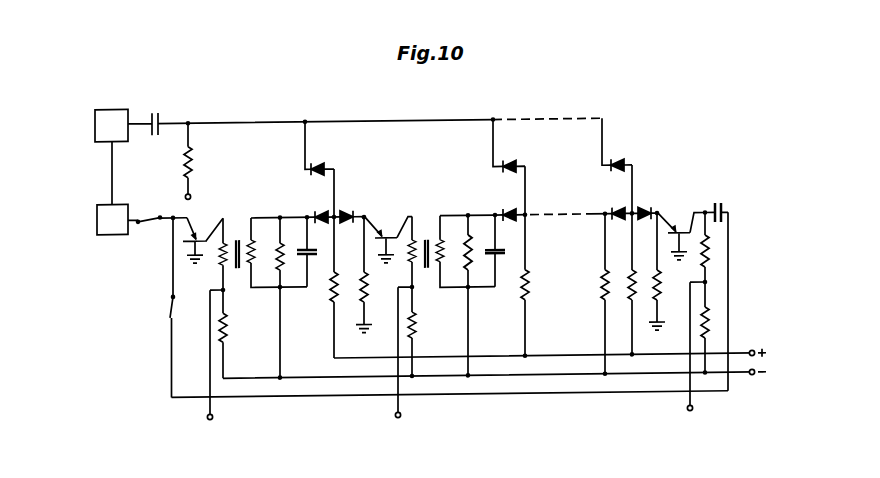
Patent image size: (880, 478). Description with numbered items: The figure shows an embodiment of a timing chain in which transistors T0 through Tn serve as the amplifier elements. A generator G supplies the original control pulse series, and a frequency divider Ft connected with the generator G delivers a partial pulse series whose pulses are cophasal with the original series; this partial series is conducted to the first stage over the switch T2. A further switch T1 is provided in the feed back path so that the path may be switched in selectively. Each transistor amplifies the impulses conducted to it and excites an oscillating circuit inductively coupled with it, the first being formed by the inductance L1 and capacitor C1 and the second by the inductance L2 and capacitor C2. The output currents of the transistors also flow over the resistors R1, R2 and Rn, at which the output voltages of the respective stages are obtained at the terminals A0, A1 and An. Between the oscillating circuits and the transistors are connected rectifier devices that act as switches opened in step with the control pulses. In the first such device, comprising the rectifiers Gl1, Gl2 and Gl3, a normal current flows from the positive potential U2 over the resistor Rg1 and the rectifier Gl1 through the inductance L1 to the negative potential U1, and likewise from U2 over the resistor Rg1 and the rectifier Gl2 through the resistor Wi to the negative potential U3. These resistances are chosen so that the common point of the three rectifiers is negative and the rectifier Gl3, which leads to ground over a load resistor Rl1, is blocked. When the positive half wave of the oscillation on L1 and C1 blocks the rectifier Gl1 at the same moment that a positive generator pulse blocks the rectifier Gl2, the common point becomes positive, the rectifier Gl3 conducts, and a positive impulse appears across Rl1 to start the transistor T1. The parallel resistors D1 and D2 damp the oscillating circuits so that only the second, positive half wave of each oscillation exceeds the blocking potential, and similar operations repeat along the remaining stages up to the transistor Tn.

The generator G is at (147, 100).
The frequency divider Ft is at (106, 250).
The resistor Wi is at (198, 158).
The negative supply potential U3 is at (199, 201).
The switch T2 is at (157, 232).
The switch / transistor T1 is at (279, 300).
The transistor T0 is at (203, 235).
The resistor R1 is at (232, 345).
The terminal A0 is at (211, 367).
The inductance L1 is at (281, 252).
The parallel resistor D1 is at (289, 297).
The capacitor C1 is at (314, 251).
The rectifier Gl1 is at (323, 208).
The rectifier Gl2 is at (318, 168).
The rectifier Gl3 is at (352, 208).
The resistor Rg1 is at (322, 287).
The resistor Rl1 is at (372, 274).
The resistor R2 is at (421, 345).
The terminal A1 is at (400, 365).
The inductance L2 is at (465, 251).
The parallel resistor D2 is at (477, 295).
The capacitor C2 is at (501, 249).
The transistor Tn is at (681, 230).
The resistor Rn is at (713, 341).
The terminal An is at (693, 357).
The positive supply potential U2 is at (550, 346).
The negative supply potential U1 is at (494, 386).